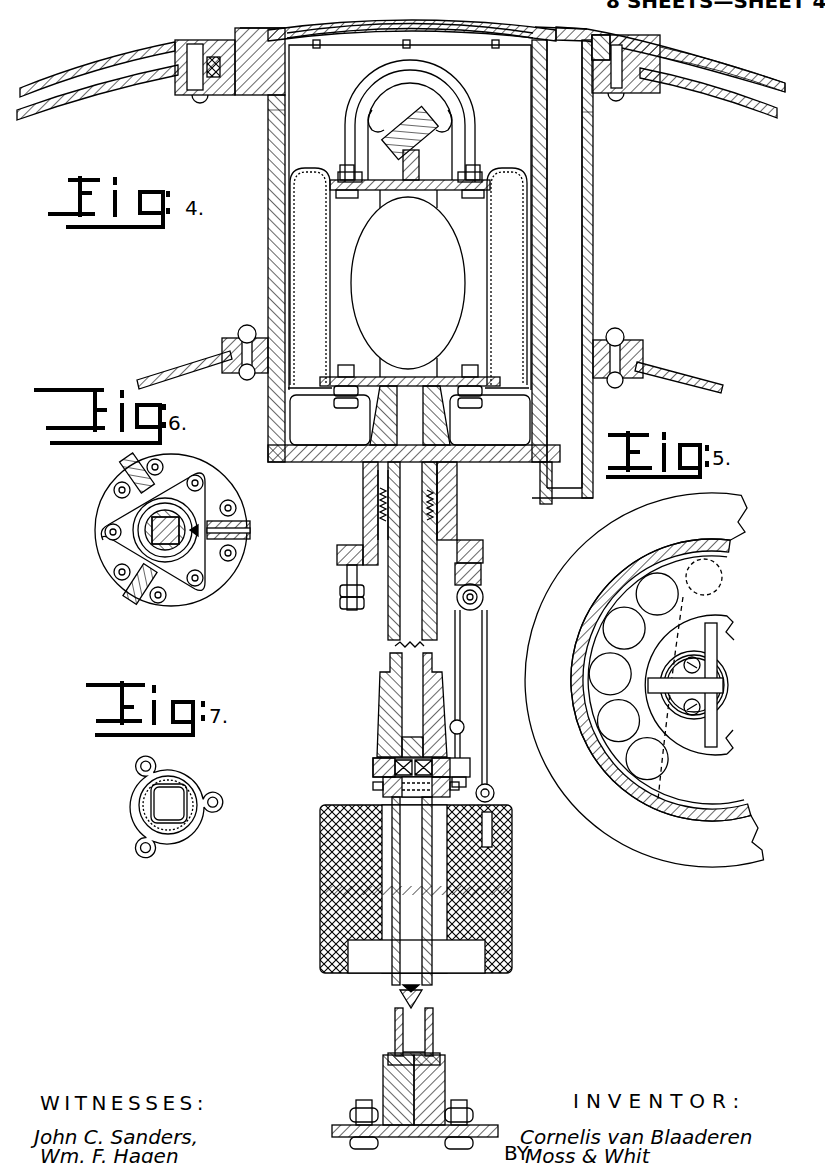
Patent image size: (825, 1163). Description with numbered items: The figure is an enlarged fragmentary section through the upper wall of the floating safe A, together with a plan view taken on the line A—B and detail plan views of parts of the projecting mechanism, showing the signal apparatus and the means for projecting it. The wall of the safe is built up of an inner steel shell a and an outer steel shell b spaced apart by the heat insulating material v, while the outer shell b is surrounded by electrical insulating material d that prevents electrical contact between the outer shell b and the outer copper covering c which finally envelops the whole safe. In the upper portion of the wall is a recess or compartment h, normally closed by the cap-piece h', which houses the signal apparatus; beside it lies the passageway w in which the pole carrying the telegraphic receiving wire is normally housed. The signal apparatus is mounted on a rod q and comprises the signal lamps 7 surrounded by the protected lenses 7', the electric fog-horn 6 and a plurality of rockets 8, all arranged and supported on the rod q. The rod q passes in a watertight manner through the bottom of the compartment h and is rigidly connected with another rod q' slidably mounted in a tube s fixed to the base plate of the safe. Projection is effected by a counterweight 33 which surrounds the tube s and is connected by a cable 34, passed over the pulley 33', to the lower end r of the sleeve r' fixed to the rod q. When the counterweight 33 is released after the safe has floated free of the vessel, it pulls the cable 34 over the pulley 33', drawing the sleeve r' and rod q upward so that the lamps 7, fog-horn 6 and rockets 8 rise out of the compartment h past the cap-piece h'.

In FIG. 4, the outer copper covering c is at (120, 58).
In FIG. 4, the outer steel shell b is at (84, 101).
In FIG. 4, the electrical insulating material d is at (149, 67).
In FIG. 4, the cap-piece h' is at (412, 15).
In FIG. 4, the safe A is at (256, 115).
In FIG. 4, the section line B is at (593, 110).
In FIG. 4, the heat insulating material v is at (426, 254).
In FIG. 4, the passageway w is at (562, 269).
In FIG. 4, the compartment h is at (410, 215).
In FIG. 5, the compartment h is at (689, 679).
In FIG. 4, the protected lenses 7' is at (393, 121).
In FIG. 5, the protected lenses 7' is at (685, 707).
In FIG. 4, the signal lamps 7 is at (410, 132).
In FIG. 5, the signal lamps 7 is at (712, 682).
In FIG. 4, the rockets 8 is at (408, 278).
In FIG. 5, the rockets 8 is at (633, 676).
In FIG. 4, the electric fog-horn 6 is at (408, 283).
In FIG. 4, the inner steel shell a is at (194, 366).
In FIG. 4, the rod q is at (395, 554).
In FIG. 6, the rod q is at (119, 530).
In FIG. 4, the pulley 33' is at (499, 675).
In FIG. 6, the pulley 33' is at (174, 539).
In FIG. 4, the cable 34 is at (496, 706).
In FIG. 4, the sleeve r' is at (402, 705).
In FIG. 7, the sleeve r' is at (153, 805).
In FIG. 4, the lower end of sleeve r is at (439, 758).
In FIG. 7, the lower end of sleeve r is at (176, 804).
In FIG. 4, the counterweight 33 is at (434, 891).
In FIG. 4, the second rod q' is at (385, 1001).
In FIG. 4, the tube s is at (424, 1004).